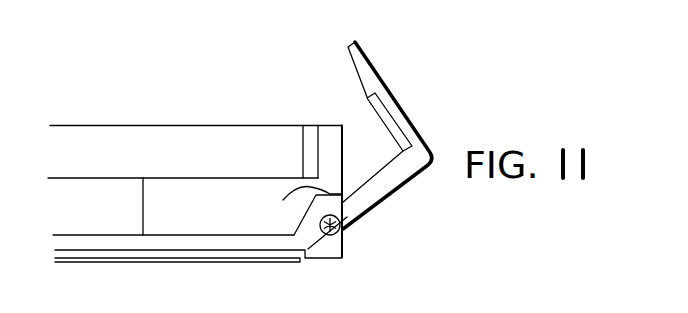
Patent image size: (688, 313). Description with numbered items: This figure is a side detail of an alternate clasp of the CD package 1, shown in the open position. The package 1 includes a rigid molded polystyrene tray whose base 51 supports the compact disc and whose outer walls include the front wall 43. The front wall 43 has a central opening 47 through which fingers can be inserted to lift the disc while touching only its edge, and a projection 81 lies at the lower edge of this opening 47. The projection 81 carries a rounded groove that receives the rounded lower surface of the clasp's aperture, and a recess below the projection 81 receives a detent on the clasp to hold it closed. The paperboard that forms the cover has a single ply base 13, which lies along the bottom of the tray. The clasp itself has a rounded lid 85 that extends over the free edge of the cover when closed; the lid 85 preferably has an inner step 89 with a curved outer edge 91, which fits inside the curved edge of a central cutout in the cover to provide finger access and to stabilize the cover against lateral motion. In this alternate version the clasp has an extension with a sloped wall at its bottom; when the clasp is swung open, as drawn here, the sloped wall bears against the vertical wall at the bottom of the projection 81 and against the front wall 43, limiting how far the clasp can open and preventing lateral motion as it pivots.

The CD package 1 is at (205, 113).
The single ply base 13 is at (242, 262).
The front wall 43 is at (322, 142).
The central opening 47 is at (308, 152).
The base 51 is at (127, 235).
The projection 81 is at (291, 196).
The clasp lid 85 is at (368, 56).
The inner step 89 is at (392, 137).
The curved outer edge 91 is at (368, 97).